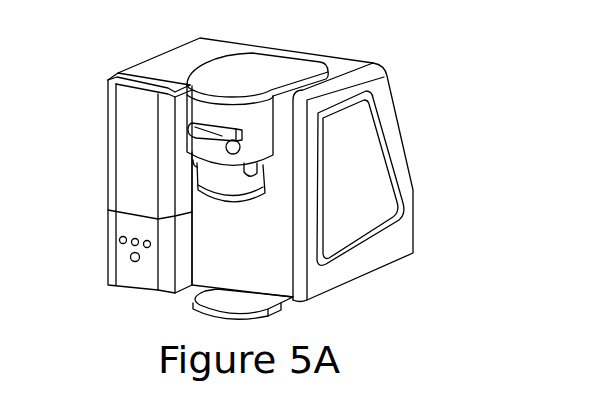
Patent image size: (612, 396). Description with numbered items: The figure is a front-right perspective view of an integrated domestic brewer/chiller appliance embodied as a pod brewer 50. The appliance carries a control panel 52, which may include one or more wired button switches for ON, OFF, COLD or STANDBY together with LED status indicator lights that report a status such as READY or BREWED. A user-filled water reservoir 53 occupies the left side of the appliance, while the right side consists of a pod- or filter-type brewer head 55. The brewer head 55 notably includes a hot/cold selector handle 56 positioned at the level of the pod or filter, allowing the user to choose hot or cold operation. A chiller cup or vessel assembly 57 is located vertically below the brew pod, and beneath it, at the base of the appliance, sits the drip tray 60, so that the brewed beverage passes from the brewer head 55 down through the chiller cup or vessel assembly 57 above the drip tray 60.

The pod brewer 50 is at (403, 70).
The control panel 52 is at (119, 240).
The water reservoir 53 is at (148, 173).
The brewer head 55 is at (293, 60).
The hot/cold selector handle 56 is at (243, 143).
The chiller cup or vessel assembly 57 is at (252, 188).
The drip tray 60 is at (243, 300).